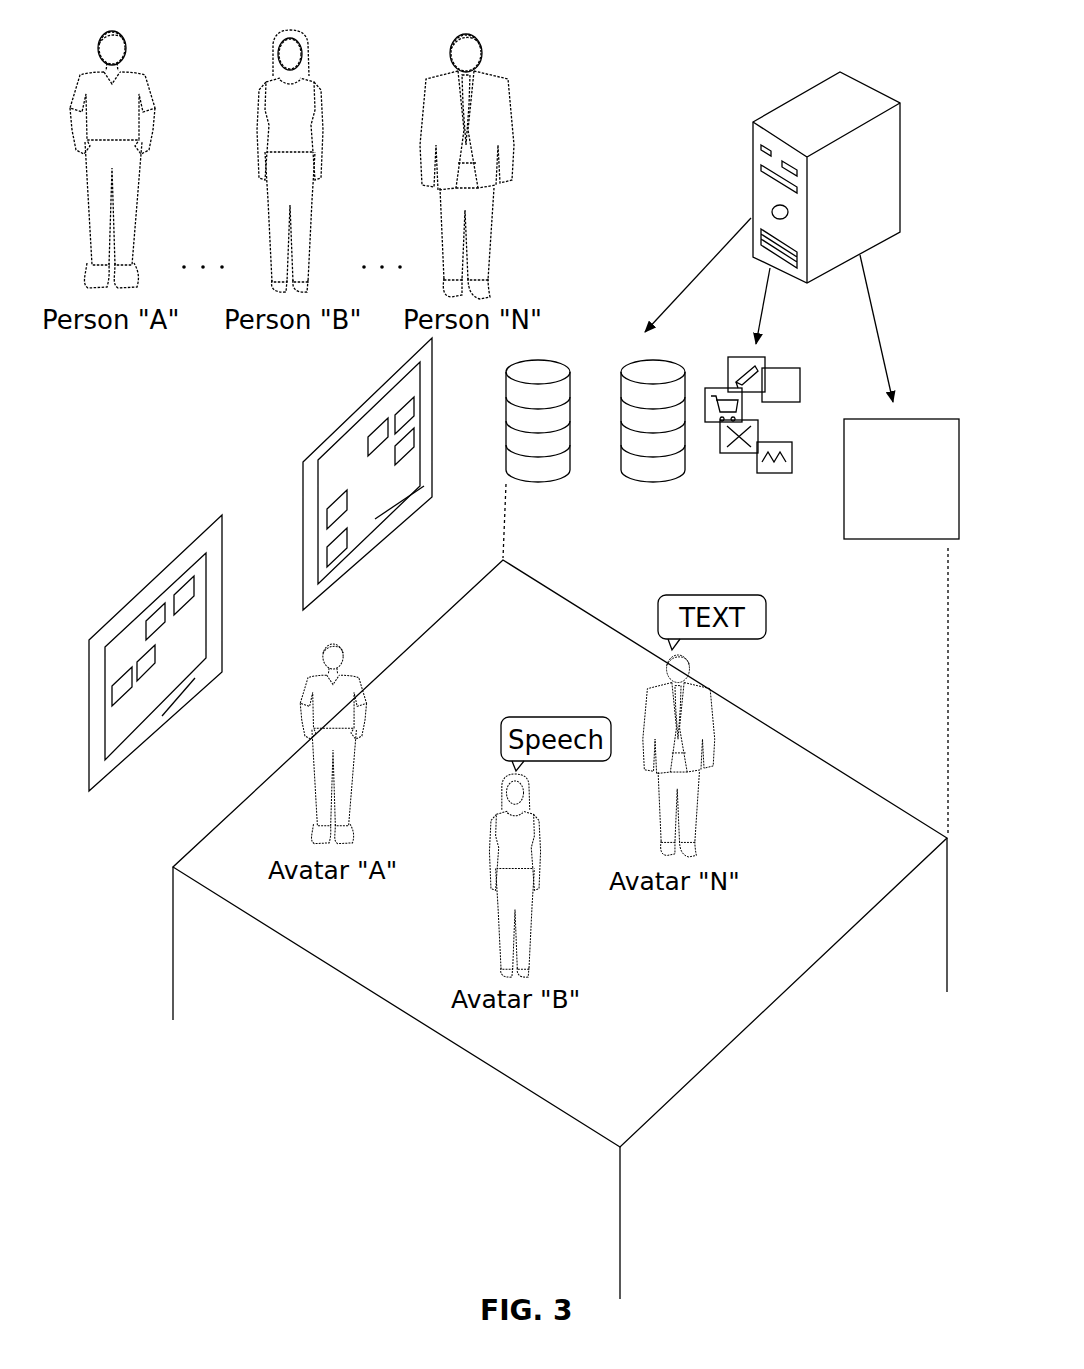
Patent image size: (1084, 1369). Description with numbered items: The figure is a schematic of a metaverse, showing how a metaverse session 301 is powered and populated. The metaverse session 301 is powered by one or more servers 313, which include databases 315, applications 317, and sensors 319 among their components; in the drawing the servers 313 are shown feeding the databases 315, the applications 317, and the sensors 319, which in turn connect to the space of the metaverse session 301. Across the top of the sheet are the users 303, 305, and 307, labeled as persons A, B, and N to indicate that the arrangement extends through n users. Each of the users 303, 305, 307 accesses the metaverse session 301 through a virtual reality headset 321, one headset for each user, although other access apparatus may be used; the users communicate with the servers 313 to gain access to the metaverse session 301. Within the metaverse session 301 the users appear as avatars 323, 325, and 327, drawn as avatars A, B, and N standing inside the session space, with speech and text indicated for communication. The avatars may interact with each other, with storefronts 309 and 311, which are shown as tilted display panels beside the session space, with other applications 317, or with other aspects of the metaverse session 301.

The metaverse session 301 is at (170, 866).
The user 303 is at (135, 223).
The user 305 is at (312, 224).
The user 307 is at (502, 216).
The storefront 309 is at (127, 602).
The storefront 311 is at (359, 406).
The server 313 is at (801, 96).
The database 315 is at (502, 452).
The application 317 is at (738, 463).
The sensors 319 is at (899, 543).
The virtual reality headset 321 is at (117, 44).
The avatar 323 is at (535, 900).
The avatar 325 is at (718, 777).
The avatar 327 is at (365, 742).